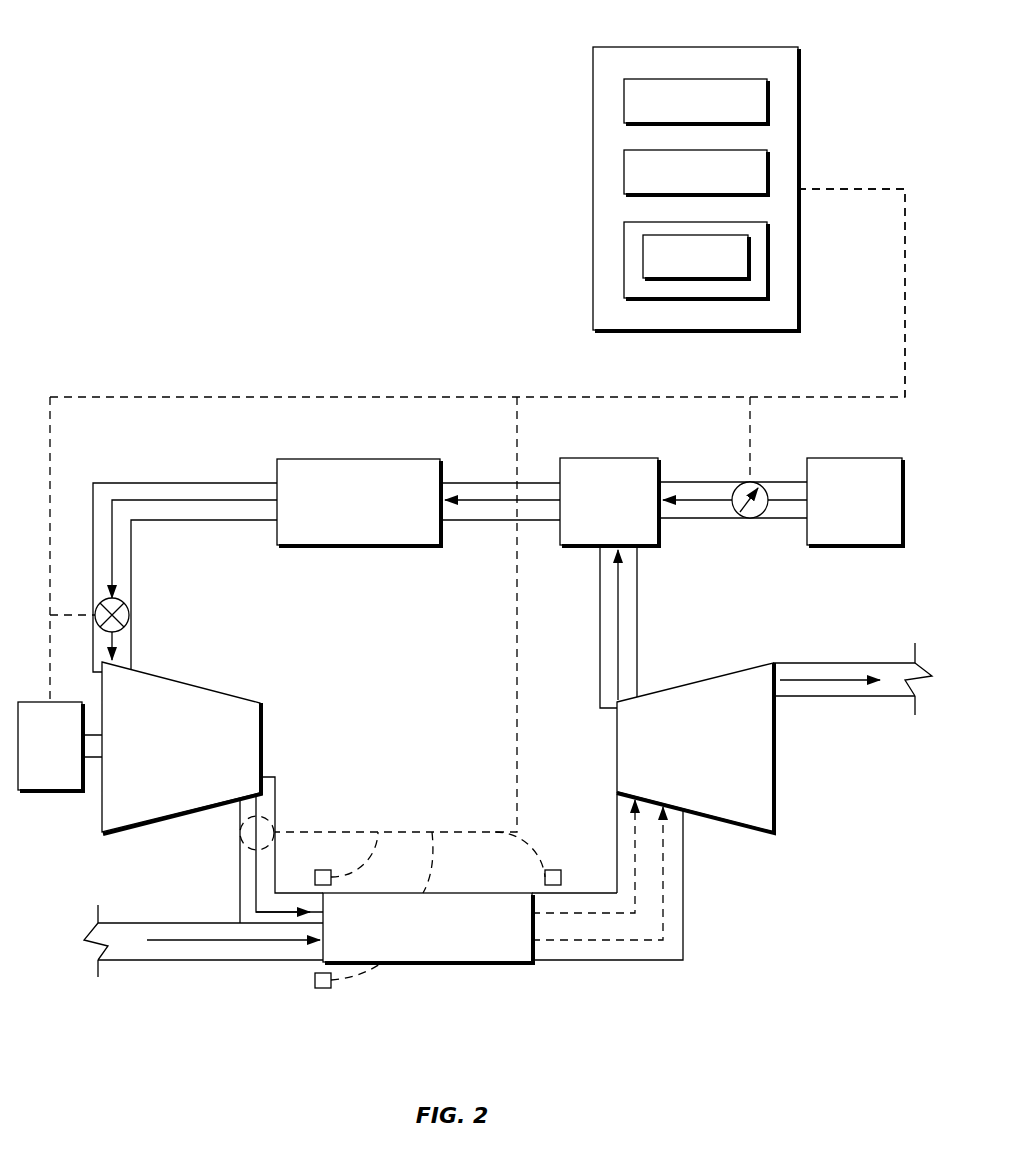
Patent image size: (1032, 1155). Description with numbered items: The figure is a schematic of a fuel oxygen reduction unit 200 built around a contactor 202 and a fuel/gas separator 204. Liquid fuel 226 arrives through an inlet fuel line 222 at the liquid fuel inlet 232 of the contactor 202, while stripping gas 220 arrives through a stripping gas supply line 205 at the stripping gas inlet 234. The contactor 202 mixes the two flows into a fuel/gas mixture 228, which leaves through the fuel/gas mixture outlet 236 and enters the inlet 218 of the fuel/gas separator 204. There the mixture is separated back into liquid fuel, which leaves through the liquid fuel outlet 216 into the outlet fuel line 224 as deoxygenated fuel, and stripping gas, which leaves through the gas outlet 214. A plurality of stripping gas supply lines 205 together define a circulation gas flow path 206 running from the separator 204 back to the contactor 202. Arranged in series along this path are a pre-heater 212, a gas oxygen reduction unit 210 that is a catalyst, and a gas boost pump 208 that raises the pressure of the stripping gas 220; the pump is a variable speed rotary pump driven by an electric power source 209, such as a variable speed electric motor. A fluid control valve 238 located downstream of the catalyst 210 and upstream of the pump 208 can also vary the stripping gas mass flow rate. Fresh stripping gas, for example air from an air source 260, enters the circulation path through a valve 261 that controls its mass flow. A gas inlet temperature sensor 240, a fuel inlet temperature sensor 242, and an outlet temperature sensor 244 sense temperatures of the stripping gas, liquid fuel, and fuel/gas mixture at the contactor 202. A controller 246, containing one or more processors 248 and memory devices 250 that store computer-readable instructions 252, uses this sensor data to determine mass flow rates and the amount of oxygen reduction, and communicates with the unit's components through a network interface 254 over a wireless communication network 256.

The fuel oxygen reduction unit 200 is at (250, 253).
The contactor 202 is at (428, 962).
The fuel/gas separator 204 is at (775, 803).
The stripping gas supply line 205 is at (115, 482).
The circulation gas flow path 206 is at (230, 478).
The gas boost pump 208 is at (208, 685).
The electric power source 209 is at (60, 746).
The gas oxygen reduction unit 210 is at (357, 459).
The pre-heater 212 is at (637, 458).
The gas outlet 214 is at (602, 718).
The liquid fuel outlet 216 is at (777, 690).
The inlet 218 is at (692, 822).
The stripping gas 220 is at (158, 502).
The inlet fuel line 222 is at (152, 962).
The outlet fuel line 224 is at (830, 698).
The liquid fuel 226 is at (225, 943).
The fuel/gas mixture 228 is at (594, 948).
The liquid fuel inlet 232 is at (315, 953).
The stripping gas inlet 234 is at (320, 902).
The fuel/gas mixture outlet 236 is at (538, 925).
The fluid control valve 238 is at (129, 615).
The gas inlet temperature sensor 240 is at (323, 869).
The fuel inlet temperature sensor 242 is at (322, 988).
The outlet temperature sensor 244 is at (553, 870).
The controller 246 is at (593, 128).
The processor 248 is at (770, 167).
The memory device 250 is at (624, 250).
The computer-readable instructions 252 is at (643, 258).
The network interface 254 is at (770, 98).
The wireless communication network 256 is at (905, 313).
The air source 260 is at (855, 502).
The valve 261 is at (751, 519).